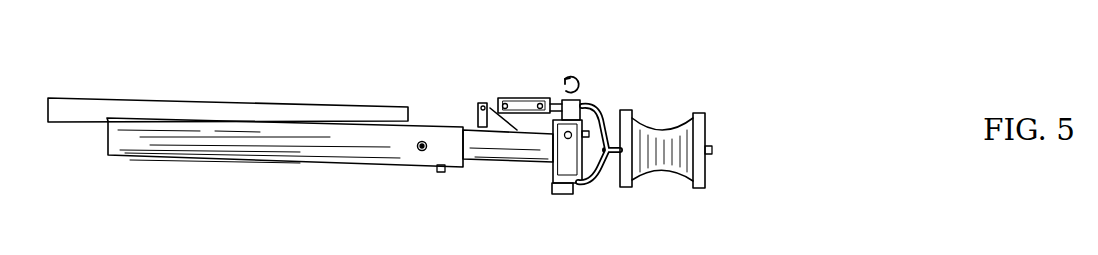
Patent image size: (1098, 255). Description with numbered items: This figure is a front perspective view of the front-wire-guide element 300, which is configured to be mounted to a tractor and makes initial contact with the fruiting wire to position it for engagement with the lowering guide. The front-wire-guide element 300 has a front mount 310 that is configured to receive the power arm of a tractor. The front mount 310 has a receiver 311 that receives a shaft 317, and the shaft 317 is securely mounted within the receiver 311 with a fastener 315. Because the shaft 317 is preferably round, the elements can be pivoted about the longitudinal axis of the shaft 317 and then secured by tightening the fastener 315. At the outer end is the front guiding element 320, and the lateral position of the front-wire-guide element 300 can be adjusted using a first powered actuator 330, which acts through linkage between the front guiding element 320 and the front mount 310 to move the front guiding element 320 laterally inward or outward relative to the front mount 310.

The front-wire-guide element 300 is at (774, 56).
The front mount 310 is at (177, 97).
The receiver 311 is at (365, 163).
The fastener 315 is at (422, 152).
The shaft 317 is at (487, 166).
The front guiding element 320 is at (690, 117).
The first powered actuator 330 is at (521, 96).